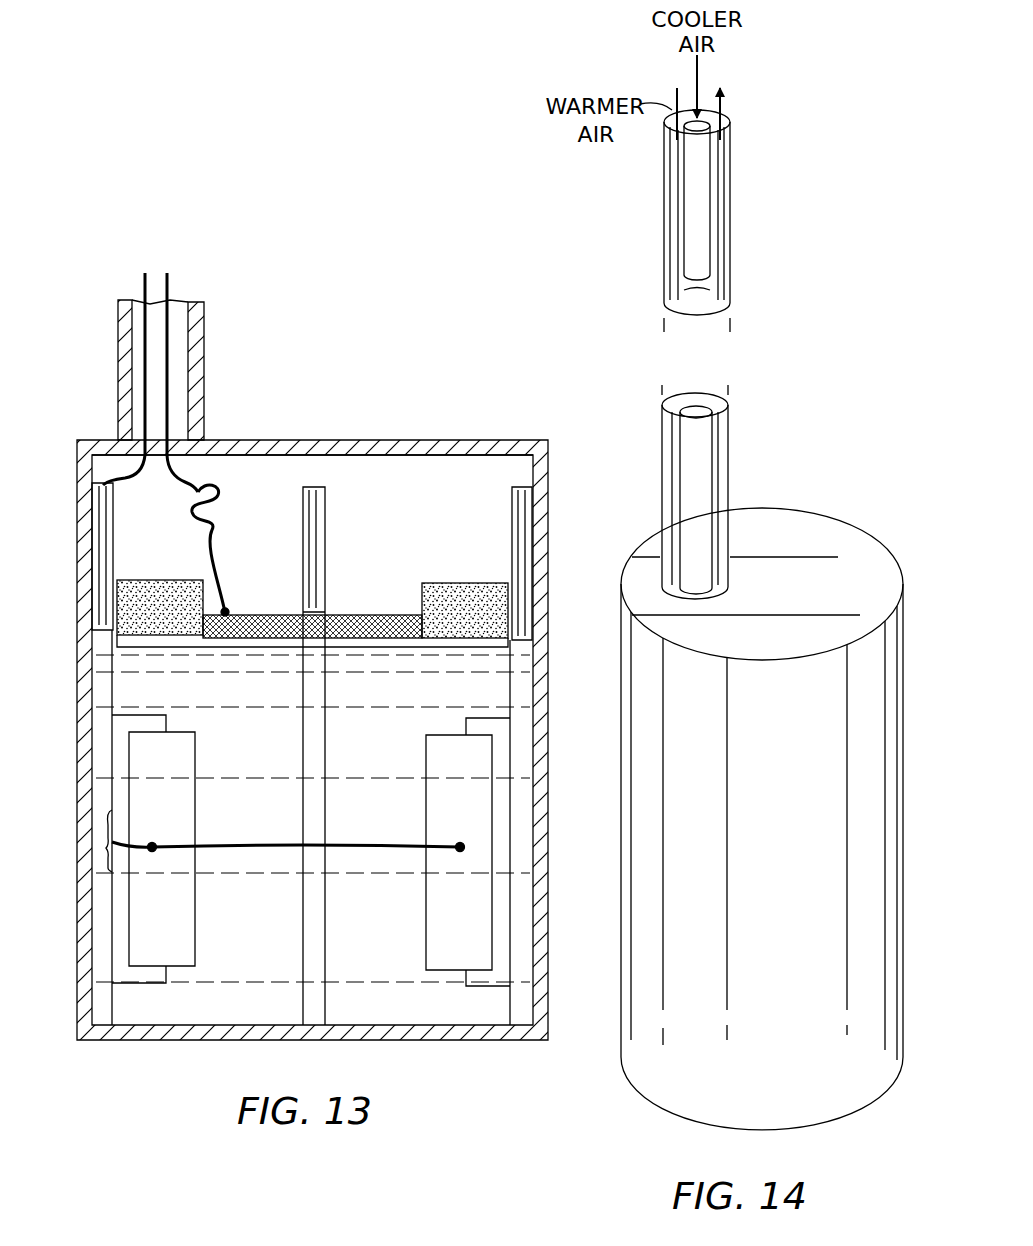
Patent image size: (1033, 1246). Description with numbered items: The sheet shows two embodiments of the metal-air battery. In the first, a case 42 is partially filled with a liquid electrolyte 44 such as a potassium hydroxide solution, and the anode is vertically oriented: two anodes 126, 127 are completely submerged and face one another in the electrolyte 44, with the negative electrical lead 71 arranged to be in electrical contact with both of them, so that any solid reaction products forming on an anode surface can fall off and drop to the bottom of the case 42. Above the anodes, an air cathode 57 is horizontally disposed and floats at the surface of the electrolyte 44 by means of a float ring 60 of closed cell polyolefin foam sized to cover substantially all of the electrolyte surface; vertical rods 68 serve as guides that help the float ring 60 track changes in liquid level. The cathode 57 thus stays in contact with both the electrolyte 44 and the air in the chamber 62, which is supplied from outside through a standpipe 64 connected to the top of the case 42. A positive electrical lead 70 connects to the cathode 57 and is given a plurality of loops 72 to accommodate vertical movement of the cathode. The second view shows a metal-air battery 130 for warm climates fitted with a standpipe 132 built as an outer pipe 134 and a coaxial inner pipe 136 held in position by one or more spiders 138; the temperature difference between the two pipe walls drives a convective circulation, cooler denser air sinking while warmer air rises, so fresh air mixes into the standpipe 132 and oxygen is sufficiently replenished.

In FIG. 13, the case 42 is at (82, 797).
In FIG. 13, the electrolyte 44 is at (125, 688).
In FIG. 13, the air cathode 57 is at (268, 614).
In FIG. 13, the float ring 60 is at (465, 597).
In FIG. 13, the chamber 62 is at (265, 465).
In FIG. 13, the standpipe 64 is at (118, 385).
In FIG. 13, the vertical rods 68 is at (113, 540).
In FIG. 13, the positive electrical lead 70 is at (168, 290).
In FIG. 13, the negative electrical lead 71 is at (143, 290).
In FIG. 13, the loops 72 is at (213, 500).
In FIG. 13, the anode 126 is at (178, 940).
In FIG. 13, the anode 127 is at (437, 946).
In FIG. 14, the metal-air battery 130 is at (806, 530).
In FIG. 14, the standpipe 132 is at (760, 204).
In FIG. 14, the outer pipe 134 is at (722, 160).
In FIG. 14, the inner pipe 136 is at (712, 110).
In FIG. 14, the spiders 138 is at (700, 303).